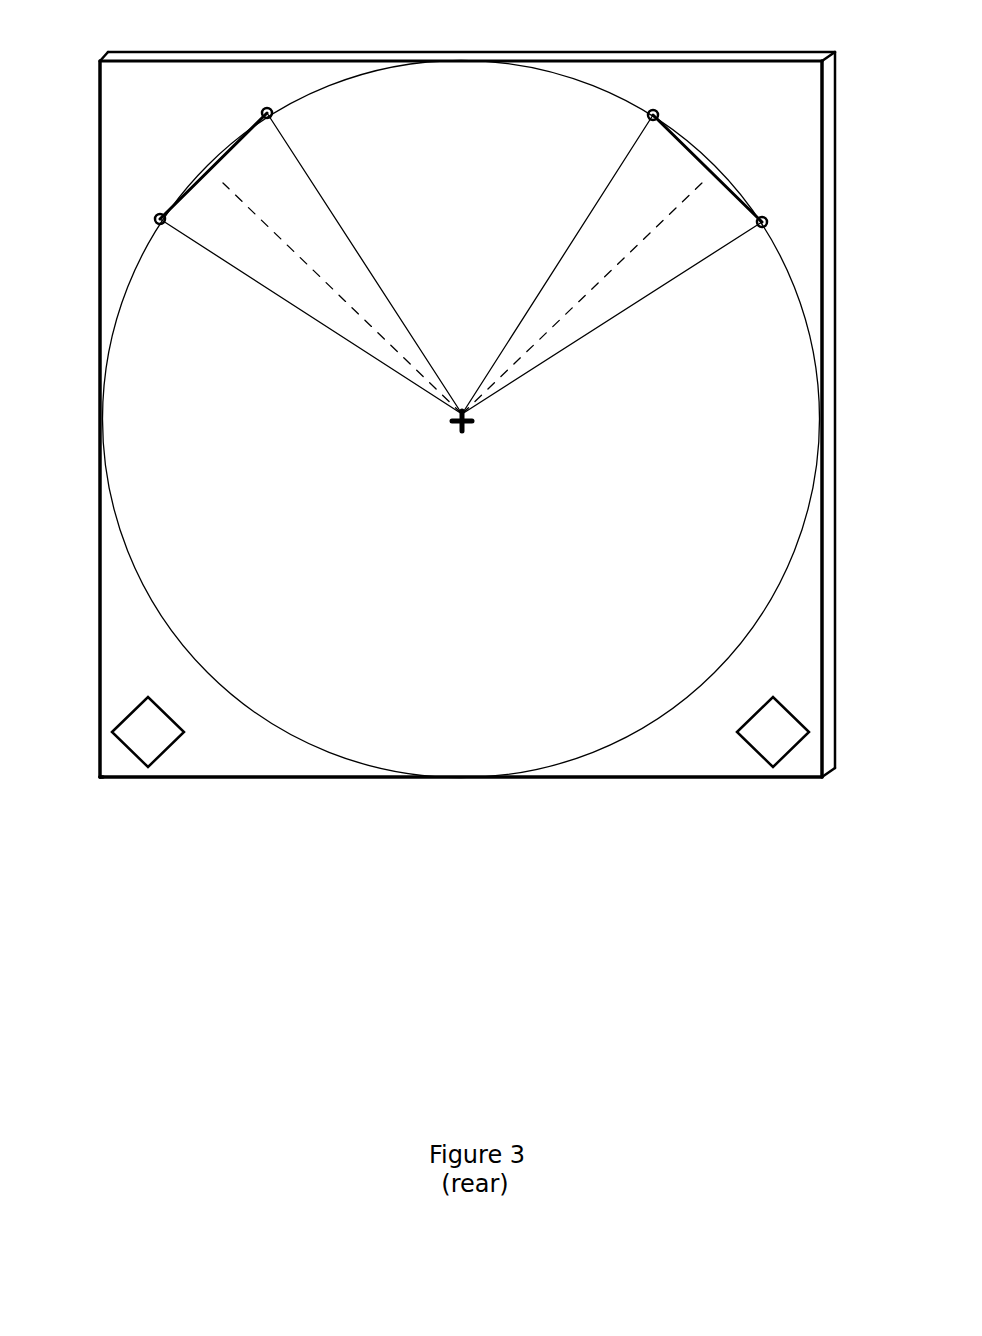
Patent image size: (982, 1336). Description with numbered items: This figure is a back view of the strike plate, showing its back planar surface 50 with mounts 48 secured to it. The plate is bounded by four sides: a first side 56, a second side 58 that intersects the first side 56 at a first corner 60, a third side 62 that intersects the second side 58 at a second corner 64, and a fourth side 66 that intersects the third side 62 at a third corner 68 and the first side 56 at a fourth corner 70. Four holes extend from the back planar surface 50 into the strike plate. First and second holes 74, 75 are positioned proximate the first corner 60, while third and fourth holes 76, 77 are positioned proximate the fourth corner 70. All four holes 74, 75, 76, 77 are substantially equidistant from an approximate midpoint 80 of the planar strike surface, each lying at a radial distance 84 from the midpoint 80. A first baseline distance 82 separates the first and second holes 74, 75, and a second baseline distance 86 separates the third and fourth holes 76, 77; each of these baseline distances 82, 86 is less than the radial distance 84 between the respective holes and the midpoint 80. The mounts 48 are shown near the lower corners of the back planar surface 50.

The mounts 48 is at (460, 732).
The back planar surface 50 is at (461, 419).
The first side 56 is at (467, 38).
The second side 58 is at (852, 414).
The first corner 60 is at (848, 53).
The third side 62 is at (461, 801).
The second corner 64 is at (848, 789).
The fourth side 66 is at (76, 419).
The third corner 68 is at (83, 796).
The fourth corner 70 is at (82, 52).
The first hole 74 is at (777, 201).
The second hole 75 is at (676, 102).
The third hole 76 is at (245, 99).
The fourth hole 77 is at (143, 202).
The midpoint 80 is at (462, 436).
The first baseline distance 82 is at (707, 168).
The radial distance 84 is at (461, 263).
The second baseline distance 86 is at (213, 166).